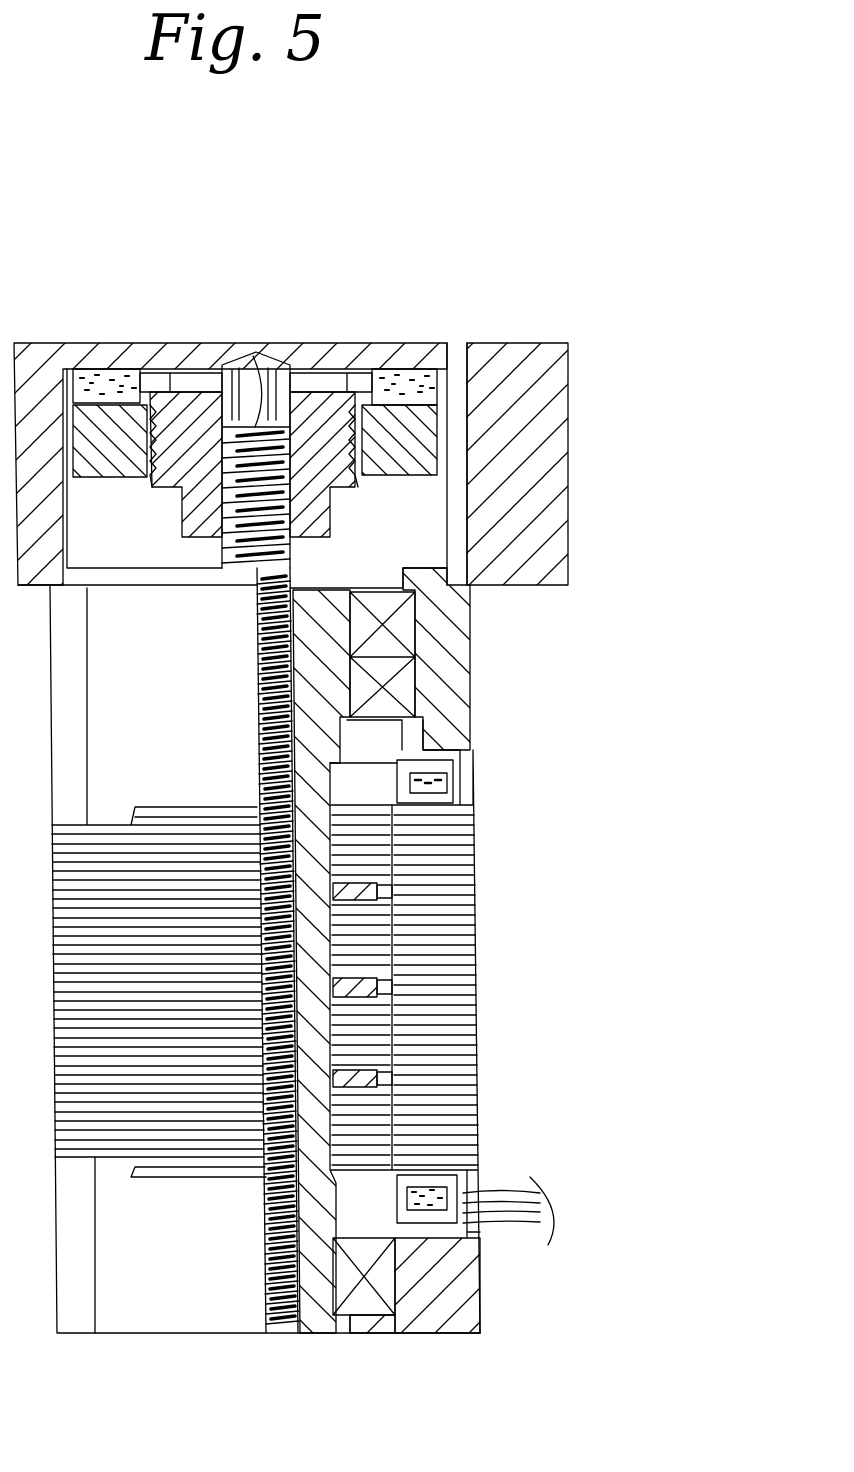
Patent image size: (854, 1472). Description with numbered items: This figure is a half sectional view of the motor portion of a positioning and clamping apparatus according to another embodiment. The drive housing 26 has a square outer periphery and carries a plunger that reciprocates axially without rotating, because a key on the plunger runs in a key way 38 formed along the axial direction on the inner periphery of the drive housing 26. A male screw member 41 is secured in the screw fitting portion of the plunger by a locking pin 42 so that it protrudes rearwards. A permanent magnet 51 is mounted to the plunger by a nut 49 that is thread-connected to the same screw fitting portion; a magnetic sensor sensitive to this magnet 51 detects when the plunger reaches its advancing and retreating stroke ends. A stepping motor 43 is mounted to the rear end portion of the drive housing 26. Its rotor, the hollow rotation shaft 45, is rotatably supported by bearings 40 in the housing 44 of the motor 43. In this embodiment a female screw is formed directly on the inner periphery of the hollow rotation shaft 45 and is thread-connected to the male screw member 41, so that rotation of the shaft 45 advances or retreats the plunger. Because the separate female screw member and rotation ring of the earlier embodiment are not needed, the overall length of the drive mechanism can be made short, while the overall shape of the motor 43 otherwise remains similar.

The drive housing 26 is at (533, 503).
The key way 38 is at (457, 550).
The bearings 40 is at (367, 687).
The male screw member 41 is at (225, 360).
The locking pin 42 is at (322, 385).
The stepping motor 43 is at (533, 840).
The housing 44 is at (453, 698).
The hollow rotation shaft 45 is at (310, 1143).
The nut 49 is at (400, 440).
The permanent magnet 51 is at (407, 380).